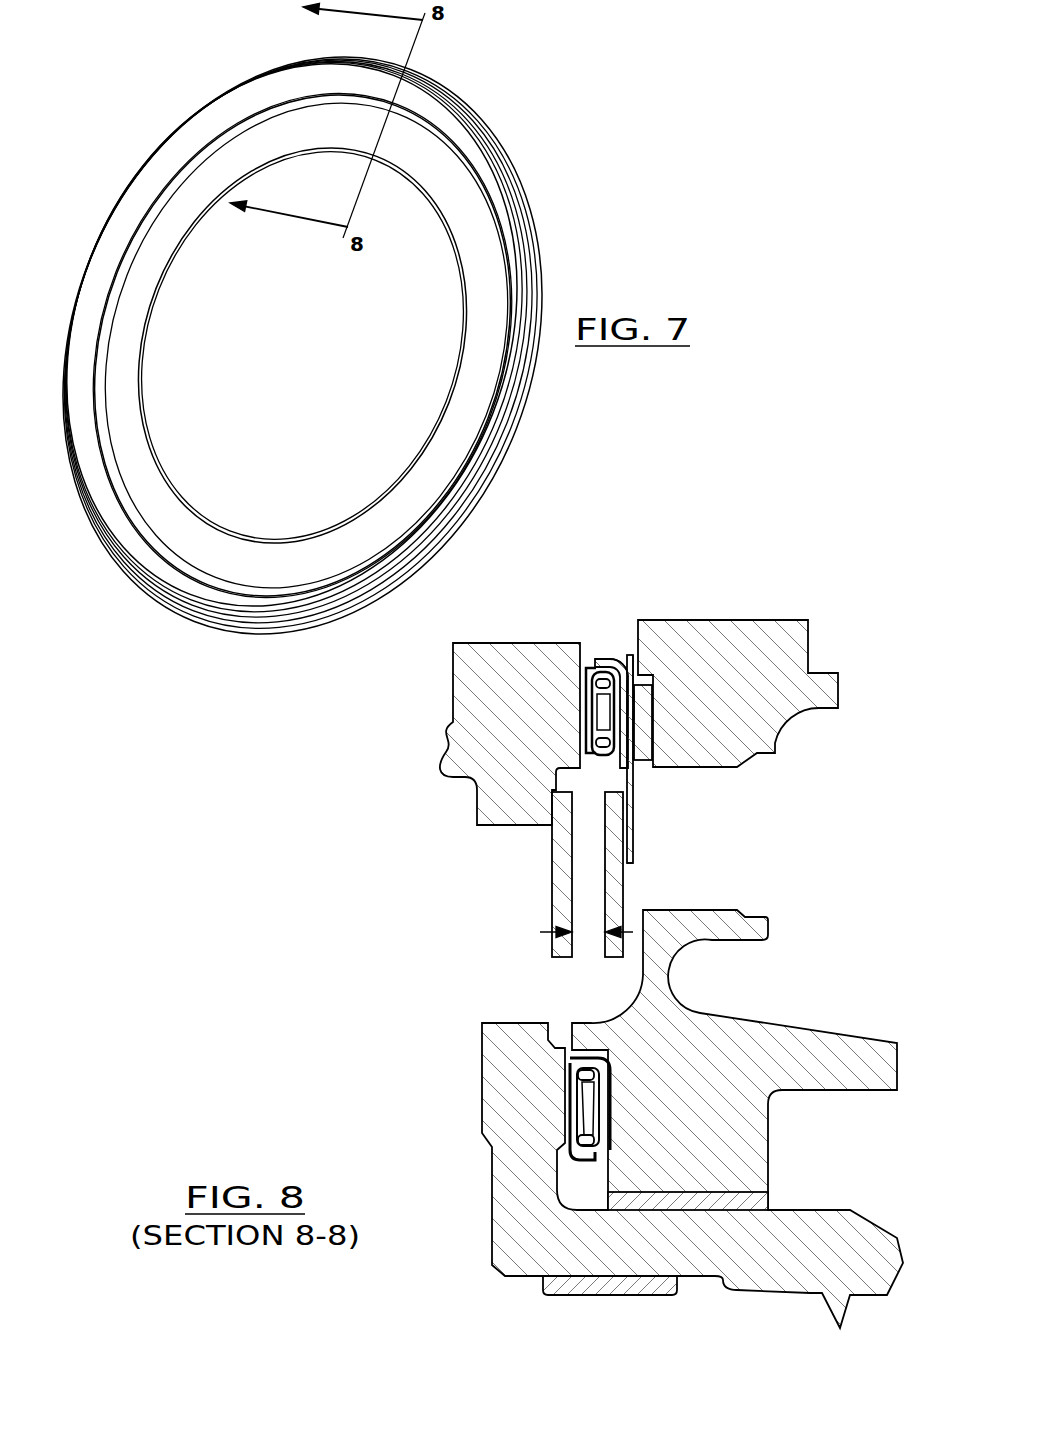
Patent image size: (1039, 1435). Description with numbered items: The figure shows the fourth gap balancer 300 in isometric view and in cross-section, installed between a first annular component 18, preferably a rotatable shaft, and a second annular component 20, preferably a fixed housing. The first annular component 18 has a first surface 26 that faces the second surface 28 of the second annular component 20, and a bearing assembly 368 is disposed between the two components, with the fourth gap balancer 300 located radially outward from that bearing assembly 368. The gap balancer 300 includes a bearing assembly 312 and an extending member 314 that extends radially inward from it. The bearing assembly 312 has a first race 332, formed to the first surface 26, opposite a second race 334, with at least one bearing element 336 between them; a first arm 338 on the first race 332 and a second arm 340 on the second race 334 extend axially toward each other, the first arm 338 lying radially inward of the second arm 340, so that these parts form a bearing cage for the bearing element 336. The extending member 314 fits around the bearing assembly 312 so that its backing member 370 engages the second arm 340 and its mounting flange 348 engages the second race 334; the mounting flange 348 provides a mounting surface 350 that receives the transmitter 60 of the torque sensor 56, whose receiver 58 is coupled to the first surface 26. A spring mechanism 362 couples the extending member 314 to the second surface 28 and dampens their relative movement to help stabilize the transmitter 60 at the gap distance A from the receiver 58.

In FIG. 8, the first annular component 18 is at (528, 648).
In FIG. 8, the second annular component 20 is at (713, 640).
In FIG. 8, the first surface 26 is at (597, 657).
In FIG. 8, the second surface 28 is at (633, 645).
In FIG. 8, the torque sensor 56 is at (460, 928).
In FIG. 8, the receiver 58 is at (563, 870).
In FIG. 8, the transmitter 60 is at (615, 907).
In FIG. 7, the fourth gap balancer 300 is at (312, 352).
In FIG. 8, the fourth gap balancer 300 is at (740, 717).
In FIG. 7, the bearing assembly 312 is at (312, 352).
In FIG. 8, the bearing assembly 312 is at (648, 718).
In FIG. 7, the extending member 314 is at (152, 107).
In FIG. 8, the extending member 314 is at (660, 703).
In FIG. 8, the first race 332 is at (588, 703).
In FIG. 8, the second race 334 is at (620, 742).
In FIG. 8, the bearing element 336 is at (596, 718).
In FIG. 8, the first arm 338 is at (600, 758).
In FIG. 8, the second arm 340 is at (590, 668).
In FIG. 7, the mounting flange 348 is at (302, 345).
In FIG. 8, the mounting flange 348 is at (628, 803).
In FIG. 7, the mounting surface 350 is at (302, 345).
In FIG. 8, the mounting surface 350 is at (617, 856).
In FIG. 8, the spring mechanism 362 is at (650, 690).
In FIG. 8, the bearing assembly 368 is at (530, 1112).
In FIG. 8, the backing member 370 is at (613, 658).